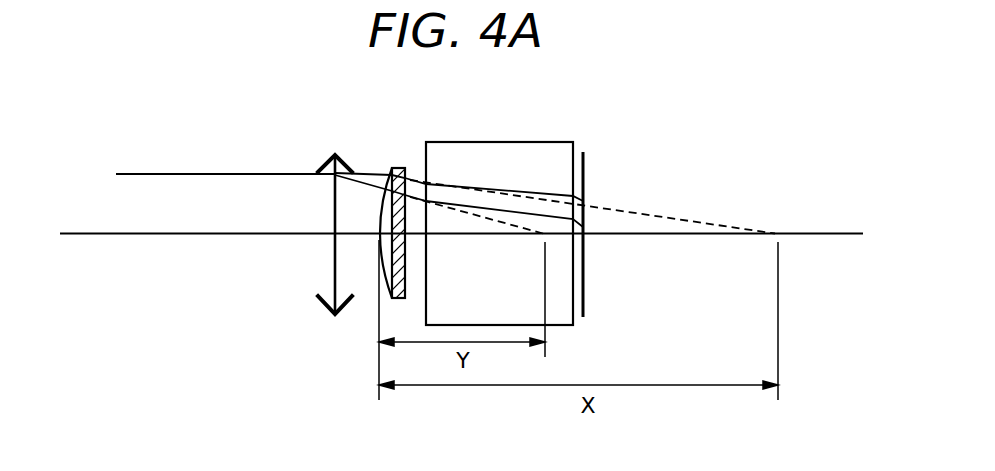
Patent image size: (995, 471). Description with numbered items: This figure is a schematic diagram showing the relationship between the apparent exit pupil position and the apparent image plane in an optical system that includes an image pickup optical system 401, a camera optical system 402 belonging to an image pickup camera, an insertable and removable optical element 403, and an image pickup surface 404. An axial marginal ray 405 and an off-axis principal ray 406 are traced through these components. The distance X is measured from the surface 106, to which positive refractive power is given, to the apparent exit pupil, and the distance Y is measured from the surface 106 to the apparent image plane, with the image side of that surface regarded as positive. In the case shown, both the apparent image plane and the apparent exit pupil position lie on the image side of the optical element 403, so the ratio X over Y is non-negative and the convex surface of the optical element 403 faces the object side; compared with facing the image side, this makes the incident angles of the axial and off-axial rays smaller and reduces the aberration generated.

The surface to which positive refractive power is given 106 is at (379, 251).
The image pickup optical system 401 is at (335, 152).
The camera optical system 402 is at (468, 141).
The optical element 403 is at (388, 166).
The image pickup surface 404 is at (585, 167).
The axial marginal ray 405 is at (200, 173).
The off-axis principal ray 406 is at (480, 186).